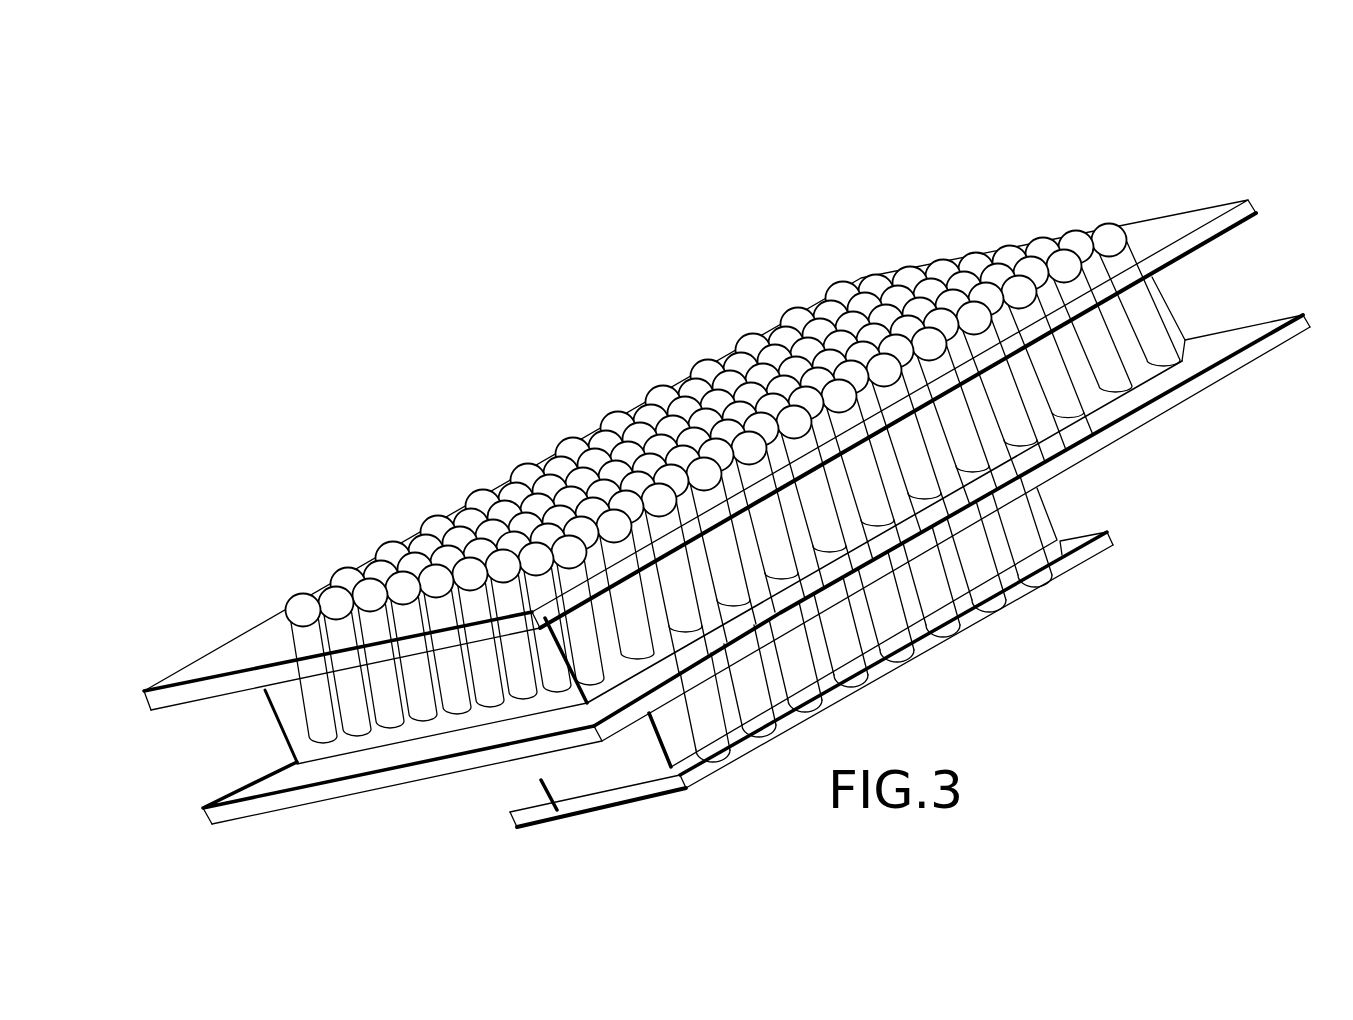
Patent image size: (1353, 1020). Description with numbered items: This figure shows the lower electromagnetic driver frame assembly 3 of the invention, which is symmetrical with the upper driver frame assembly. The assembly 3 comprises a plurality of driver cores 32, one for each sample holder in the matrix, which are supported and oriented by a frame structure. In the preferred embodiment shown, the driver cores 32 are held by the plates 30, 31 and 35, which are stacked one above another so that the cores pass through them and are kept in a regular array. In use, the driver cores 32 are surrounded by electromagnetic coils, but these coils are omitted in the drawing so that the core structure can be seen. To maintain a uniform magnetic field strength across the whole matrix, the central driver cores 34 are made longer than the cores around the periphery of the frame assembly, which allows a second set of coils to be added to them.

The electromagnetic driver frame assembly 3 is at (1178, 180).
The plate 30 is at (1160, 232).
The plate 31 is at (1255, 350).
The driver cores 32 is at (594, 432).
The central driver cores 34 is at (548, 780).
The plate 35 is at (600, 806).